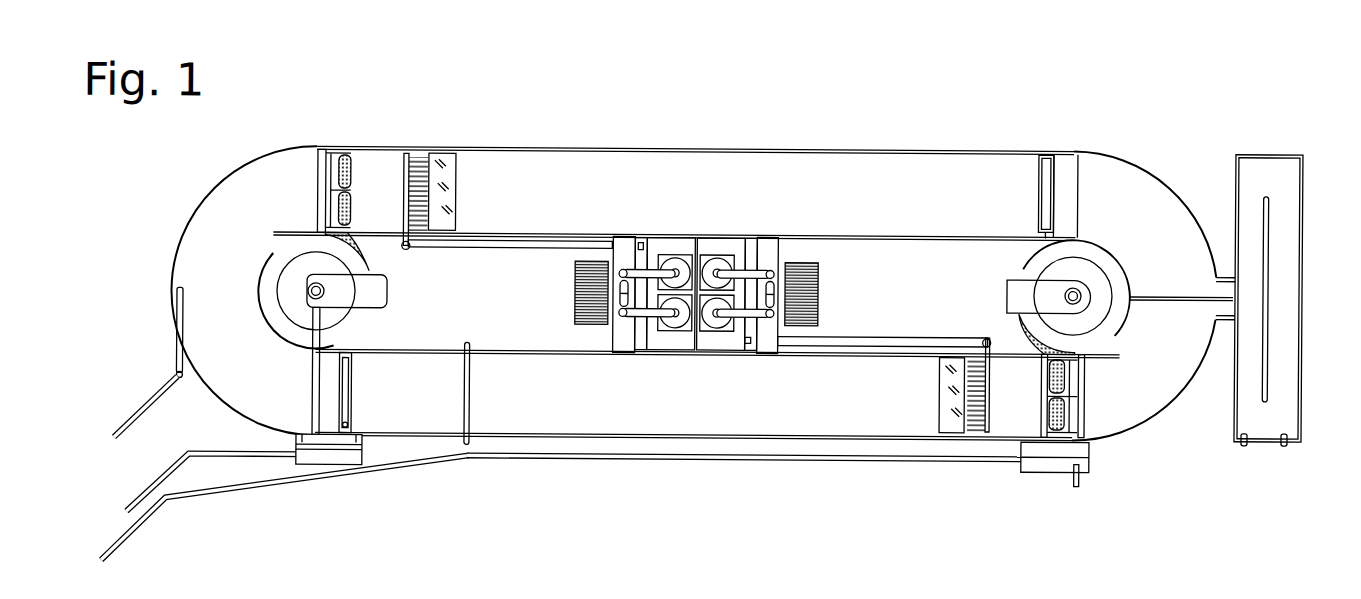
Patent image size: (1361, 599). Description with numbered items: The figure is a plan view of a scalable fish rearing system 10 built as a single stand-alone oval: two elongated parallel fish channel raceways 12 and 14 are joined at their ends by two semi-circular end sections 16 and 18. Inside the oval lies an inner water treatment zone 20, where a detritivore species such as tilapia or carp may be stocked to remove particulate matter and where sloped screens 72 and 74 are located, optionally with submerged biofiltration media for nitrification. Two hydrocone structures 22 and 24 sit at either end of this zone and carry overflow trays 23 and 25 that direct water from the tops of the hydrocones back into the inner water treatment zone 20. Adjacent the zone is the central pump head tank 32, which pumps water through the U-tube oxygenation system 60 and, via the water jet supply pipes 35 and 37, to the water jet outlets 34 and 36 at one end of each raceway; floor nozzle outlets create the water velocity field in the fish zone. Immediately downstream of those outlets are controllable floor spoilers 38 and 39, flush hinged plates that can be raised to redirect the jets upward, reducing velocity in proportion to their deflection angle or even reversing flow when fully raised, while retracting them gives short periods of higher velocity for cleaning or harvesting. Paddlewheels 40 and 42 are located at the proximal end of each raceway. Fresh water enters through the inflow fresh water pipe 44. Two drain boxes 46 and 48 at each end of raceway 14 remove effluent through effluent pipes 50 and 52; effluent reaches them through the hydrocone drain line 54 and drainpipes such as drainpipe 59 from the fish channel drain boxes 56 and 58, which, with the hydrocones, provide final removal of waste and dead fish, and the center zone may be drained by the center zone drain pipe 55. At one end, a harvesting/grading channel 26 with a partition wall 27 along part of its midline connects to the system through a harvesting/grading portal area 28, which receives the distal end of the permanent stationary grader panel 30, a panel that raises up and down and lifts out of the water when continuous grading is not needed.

The fish rearing system 10 is at (402, 98).
The elongated fish channel raceway 12 is at (650, 163).
The elongated fish channel raceway 14 is at (798, 405).
The semi-circular end section 16 is at (262, 186).
The semi-circular end section 18 is at (1102, 188).
The inner water treatment zone 20 is at (853, 257).
The hydrocone structure 22 is at (240, 249).
The overflow tray 23 is at (308, 294).
The hydrocone structure 24 is at (1145, 333).
The overflow tray 25 is at (1007, 298).
The harvesting/grading channel 26 is at (1282, 164).
The partition wall 27 is at (1280, 316).
The harvesting/grading portal area 28 is at (1227, 287).
The permanent stationary grader panel 30 is at (1183, 300).
The central pump head tank 32 is at (673, 373).
The water jet outlet 34 is at (413, 155).
The water jet supply pipe 35 is at (481, 242).
The water jet outlet 36 is at (987, 433).
The water jet supply pipe 37 is at (870, 345).
The controllable floor spoiler 38 is at (953, 402).
The controllable floor spoiler 39 is at (427, 172).
The paddlewheel 40 is at (350, 159).
The paddlewheel 42 is at (1063, 396).
The inflow fresh water pipe 44 is at (152, 402).
The drain box 46 is at (1063, 465).
The drain box 48 is at (353, 460).
The effluent pipe 50 is at (505, 459).
The effluent pipe 52 is at (147, 497).
The hydrocone drain line 54 is at (313, 367).
The center zone drain pipe 55 is at (470, 393).
The fish channel drain box 56 is at (347, 395).
The fish channel drain box 58 is at (1044, 208).
The drainpipe 59 is at (1040, 402).
The U-tube oxygenation system 60 is at (697, 222).
The sloped screen 72 is at (594, 283).
The sloped screen 74 is at (798, 274).